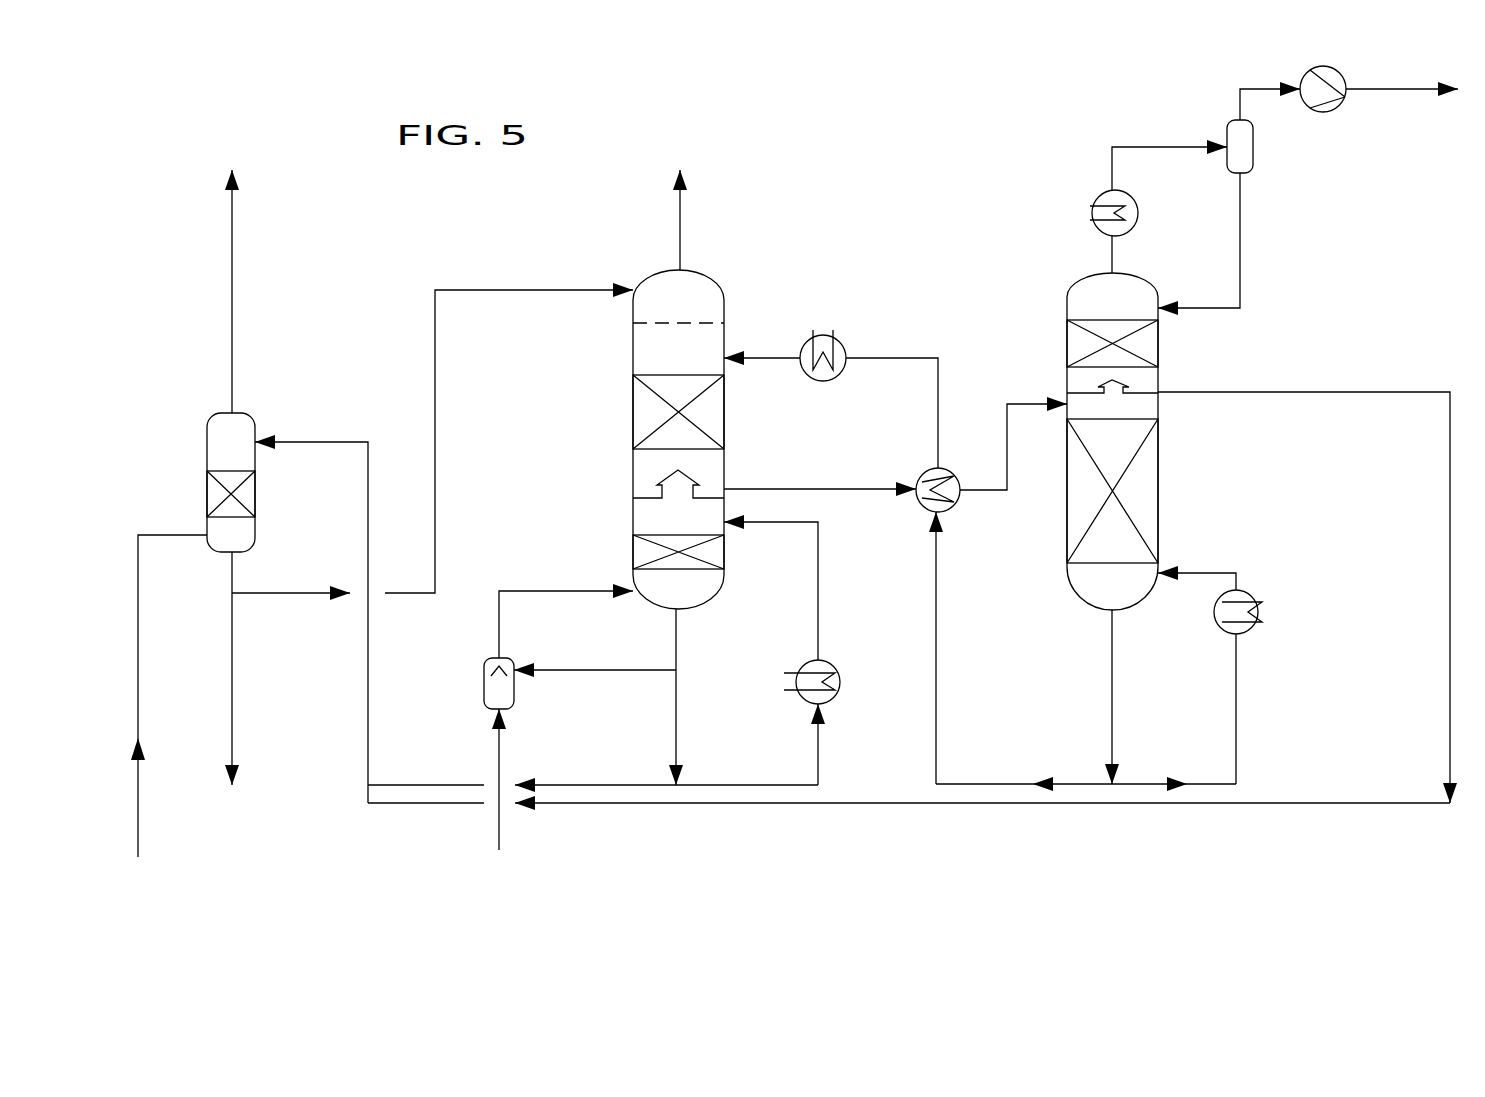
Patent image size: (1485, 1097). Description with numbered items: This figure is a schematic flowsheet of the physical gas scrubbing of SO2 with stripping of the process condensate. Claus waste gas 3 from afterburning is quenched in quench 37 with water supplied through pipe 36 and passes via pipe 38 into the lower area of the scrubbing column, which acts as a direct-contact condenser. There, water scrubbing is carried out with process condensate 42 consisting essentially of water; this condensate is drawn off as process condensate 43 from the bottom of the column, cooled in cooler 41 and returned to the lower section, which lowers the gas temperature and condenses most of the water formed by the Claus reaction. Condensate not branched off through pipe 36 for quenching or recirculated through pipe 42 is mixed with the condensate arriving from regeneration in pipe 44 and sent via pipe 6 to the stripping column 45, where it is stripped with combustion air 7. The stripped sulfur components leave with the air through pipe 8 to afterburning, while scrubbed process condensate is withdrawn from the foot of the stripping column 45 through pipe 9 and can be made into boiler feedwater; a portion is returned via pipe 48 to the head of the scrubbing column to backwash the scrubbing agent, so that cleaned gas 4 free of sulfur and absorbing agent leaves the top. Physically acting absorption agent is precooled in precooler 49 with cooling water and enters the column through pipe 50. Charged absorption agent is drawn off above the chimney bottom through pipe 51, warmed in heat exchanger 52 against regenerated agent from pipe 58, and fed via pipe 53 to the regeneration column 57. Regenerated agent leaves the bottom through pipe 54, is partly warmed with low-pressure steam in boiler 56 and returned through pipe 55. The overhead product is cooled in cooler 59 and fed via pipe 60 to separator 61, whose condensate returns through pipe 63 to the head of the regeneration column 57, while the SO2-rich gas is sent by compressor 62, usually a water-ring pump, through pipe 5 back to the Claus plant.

The Claus waste gas 3 is at (494, 798).
The cleaned gas 4 is at (680, 230).
The pipe 5 is at (1418, 89).
The pipe 6 is at (368, 498).
The combustion air 7 is at (138, 615).
The pipe 8 is at (232, 270).
The pipe 9 is at (232, 663).
The pipe 36 is at (598, 670).
The quench 37 is at (484, 696).
The pipe 38 is at (560, 591).
The cooling 41 is at (792, 680).
The process condensate 42 is at (818, 592).
The process condensate 43 is at (676, 650).
The pipe 44 is at (1450, 538).
The stripping column 45 is at (207, 430).
The pipe 48 is at (288, 593).
The precooler 49 is at (830, 334).
The pipe 50 is at (760, 358).
The pipe 51 is at (778, 489).
The heat exchanger 52 is at (918, 478).
The pipe 53 is at (1007, 404).
The pipe 54 is at (1112, 672).
The pipe 55 is at (1236, 700).
The boiler 56 is at (1262, 612).
The regeneration column 57 is at (1158, 476).
The pipe 58 is at (995, 784).
The cooler 59 is at (1092, 212).
The pipe 60 is at (1135, 147).
The separator 61 is at (1253, 140).
The compressor 62 is at (1300, 78).
The pipe 63 is at (1240, 250).